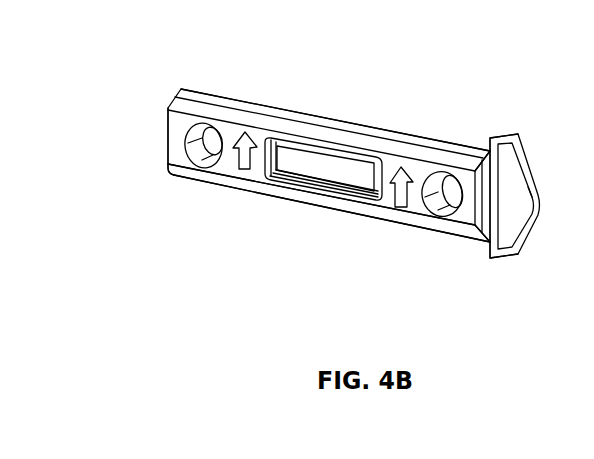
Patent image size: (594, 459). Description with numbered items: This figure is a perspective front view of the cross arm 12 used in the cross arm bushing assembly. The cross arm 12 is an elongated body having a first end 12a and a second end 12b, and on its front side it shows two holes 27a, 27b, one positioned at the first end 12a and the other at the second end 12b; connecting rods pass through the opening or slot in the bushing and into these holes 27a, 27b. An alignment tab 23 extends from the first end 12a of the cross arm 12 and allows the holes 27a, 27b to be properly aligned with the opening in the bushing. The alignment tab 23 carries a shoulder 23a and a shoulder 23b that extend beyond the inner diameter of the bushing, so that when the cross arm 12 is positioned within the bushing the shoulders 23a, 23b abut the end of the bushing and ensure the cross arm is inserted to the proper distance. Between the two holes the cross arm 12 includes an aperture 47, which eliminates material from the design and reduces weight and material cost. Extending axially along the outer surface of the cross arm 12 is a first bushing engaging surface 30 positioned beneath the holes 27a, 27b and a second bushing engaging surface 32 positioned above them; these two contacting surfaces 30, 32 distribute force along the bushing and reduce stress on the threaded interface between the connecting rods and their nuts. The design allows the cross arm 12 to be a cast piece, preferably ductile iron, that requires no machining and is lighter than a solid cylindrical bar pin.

The cross arm 12 is at (322, 198).
The first end 12a is at (476, 152).
The second end 12b is at (167, 157).
The alignment tab 23 is at (527, 173).
The shoulder 23a is at (490, 136).
The shoulder 23b is at (490, 248).
The hole 27a is at (197, 135).
The hole 27b is at (434, 181).
The first bushing engaging surface 30 is at (252, 192).
The second bushing engaging surface 32 is at (248, 108).
The aperture 47 is at (322, 157).